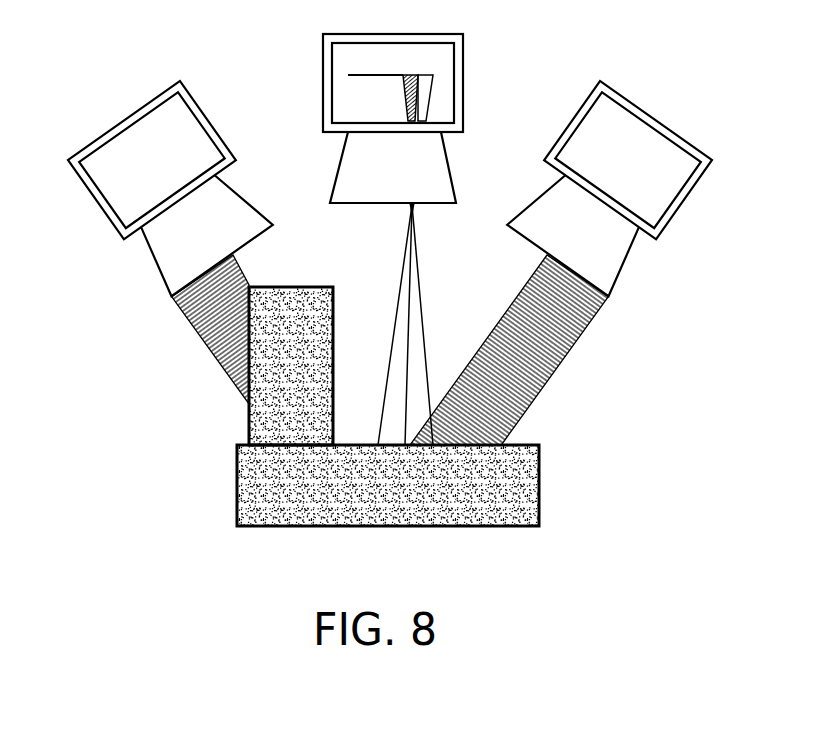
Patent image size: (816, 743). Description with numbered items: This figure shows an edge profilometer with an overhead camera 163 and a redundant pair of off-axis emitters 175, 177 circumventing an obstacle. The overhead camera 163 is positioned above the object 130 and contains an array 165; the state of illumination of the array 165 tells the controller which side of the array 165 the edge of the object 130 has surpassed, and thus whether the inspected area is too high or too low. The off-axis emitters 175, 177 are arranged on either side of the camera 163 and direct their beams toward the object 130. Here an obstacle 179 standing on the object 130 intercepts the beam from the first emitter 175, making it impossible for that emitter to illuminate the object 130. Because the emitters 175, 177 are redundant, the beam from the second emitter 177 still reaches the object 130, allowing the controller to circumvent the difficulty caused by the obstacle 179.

The camera 163 is at (396, 239).
The array 165 is at (411, 75).
The off-axis emitter 175 is at (123, 178).
The off-axis emitter 177 is at (600, 170).
The obstacle 179 is at (248, 413).
The object 130 is at (236, 505).